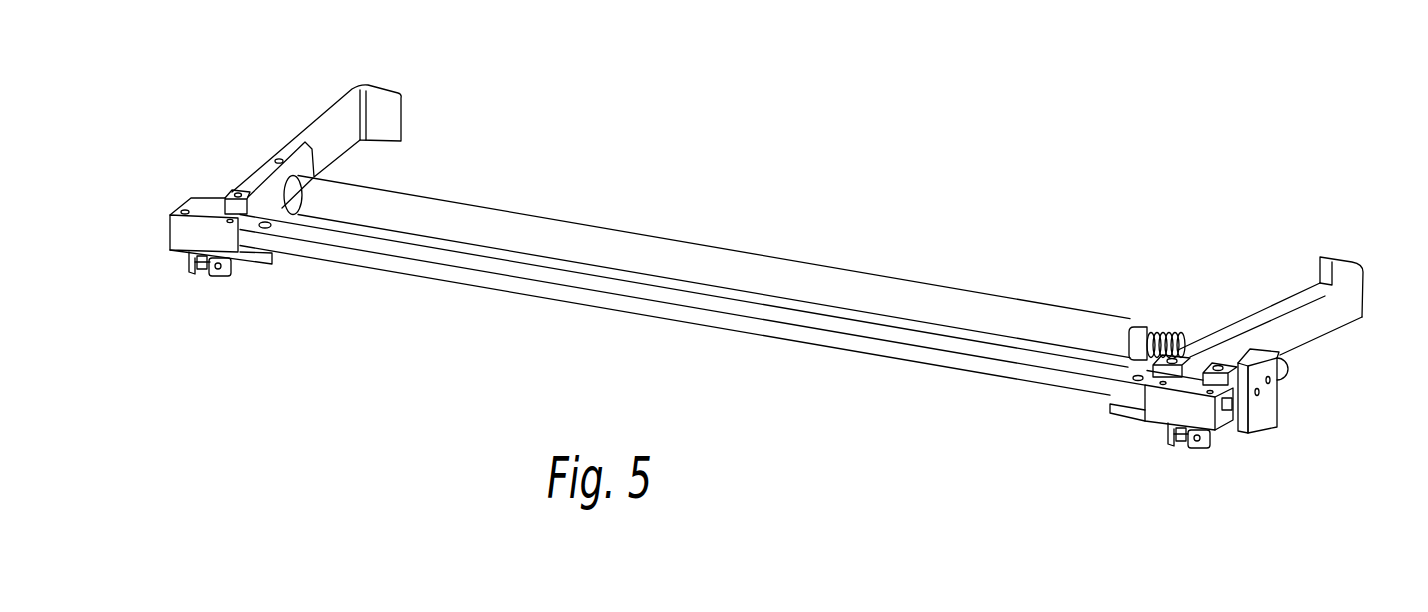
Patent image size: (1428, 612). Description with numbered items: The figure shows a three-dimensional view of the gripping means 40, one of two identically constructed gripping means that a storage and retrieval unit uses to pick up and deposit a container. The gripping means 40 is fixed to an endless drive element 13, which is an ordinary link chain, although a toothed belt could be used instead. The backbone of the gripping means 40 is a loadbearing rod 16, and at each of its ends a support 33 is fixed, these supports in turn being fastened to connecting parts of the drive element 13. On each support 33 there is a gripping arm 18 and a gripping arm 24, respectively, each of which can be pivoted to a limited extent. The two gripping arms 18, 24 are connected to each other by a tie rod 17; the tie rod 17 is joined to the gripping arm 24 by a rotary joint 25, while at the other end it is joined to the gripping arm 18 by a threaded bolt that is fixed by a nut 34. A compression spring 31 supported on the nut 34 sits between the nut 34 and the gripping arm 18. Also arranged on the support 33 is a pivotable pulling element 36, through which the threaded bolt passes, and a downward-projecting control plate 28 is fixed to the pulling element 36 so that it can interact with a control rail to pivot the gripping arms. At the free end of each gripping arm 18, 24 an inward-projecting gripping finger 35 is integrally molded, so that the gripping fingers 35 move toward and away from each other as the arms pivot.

The drive element 13 is at (205, 263).
The loadbearing rod 16 is at (1015, 373).
The tie rod 17 is at (1015, 312).
The gripping arm 18 is at (1330, 318).
The gripping arm 24 is at (343, 138).
The rotary joint 25 is at (278, 160).
The control plate 28 is at (1260, 407).
The compression spring 31 is at (1168, 330).
The support 33 is at (185, 230).
The nut 34 is at (1143, 327).
The gripping finger 35 is at (1330, 270).
The pulling element 36 is at (1247, 347).
The gripping means 40 is at (528, 295).